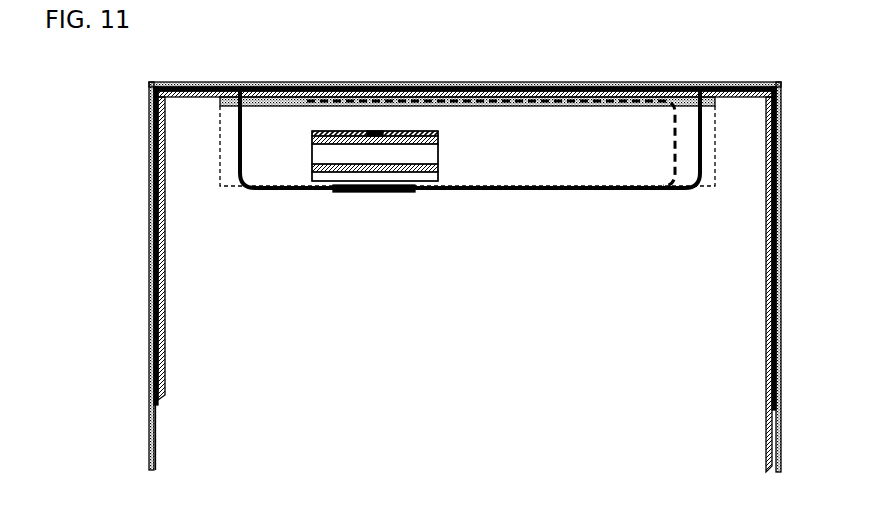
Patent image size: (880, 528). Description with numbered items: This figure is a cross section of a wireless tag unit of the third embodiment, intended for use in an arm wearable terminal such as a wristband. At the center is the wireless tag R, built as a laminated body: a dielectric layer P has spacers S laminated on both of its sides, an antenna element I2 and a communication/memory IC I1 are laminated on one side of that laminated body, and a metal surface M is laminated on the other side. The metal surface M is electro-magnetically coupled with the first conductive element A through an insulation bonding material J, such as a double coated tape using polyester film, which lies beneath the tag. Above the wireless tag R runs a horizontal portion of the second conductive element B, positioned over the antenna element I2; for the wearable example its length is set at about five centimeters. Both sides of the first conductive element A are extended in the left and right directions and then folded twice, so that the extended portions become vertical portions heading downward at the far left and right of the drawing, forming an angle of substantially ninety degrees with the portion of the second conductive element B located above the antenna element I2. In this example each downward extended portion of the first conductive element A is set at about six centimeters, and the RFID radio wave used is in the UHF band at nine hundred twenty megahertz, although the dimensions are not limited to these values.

The communication/memory IC I1 is at (335, 142).
The antenna element I2 is at (312, 133).
The spacer S is at (438, 134).
The dielectric layer P is at (438, 150).
The metal surface M is at (438, 177).
The wireless tag R is at (493, 122).
The second conductive element B is at (610, 101).
The first conductive element A is at (608, 186).
The insulation bonding material J is at (325, 191).